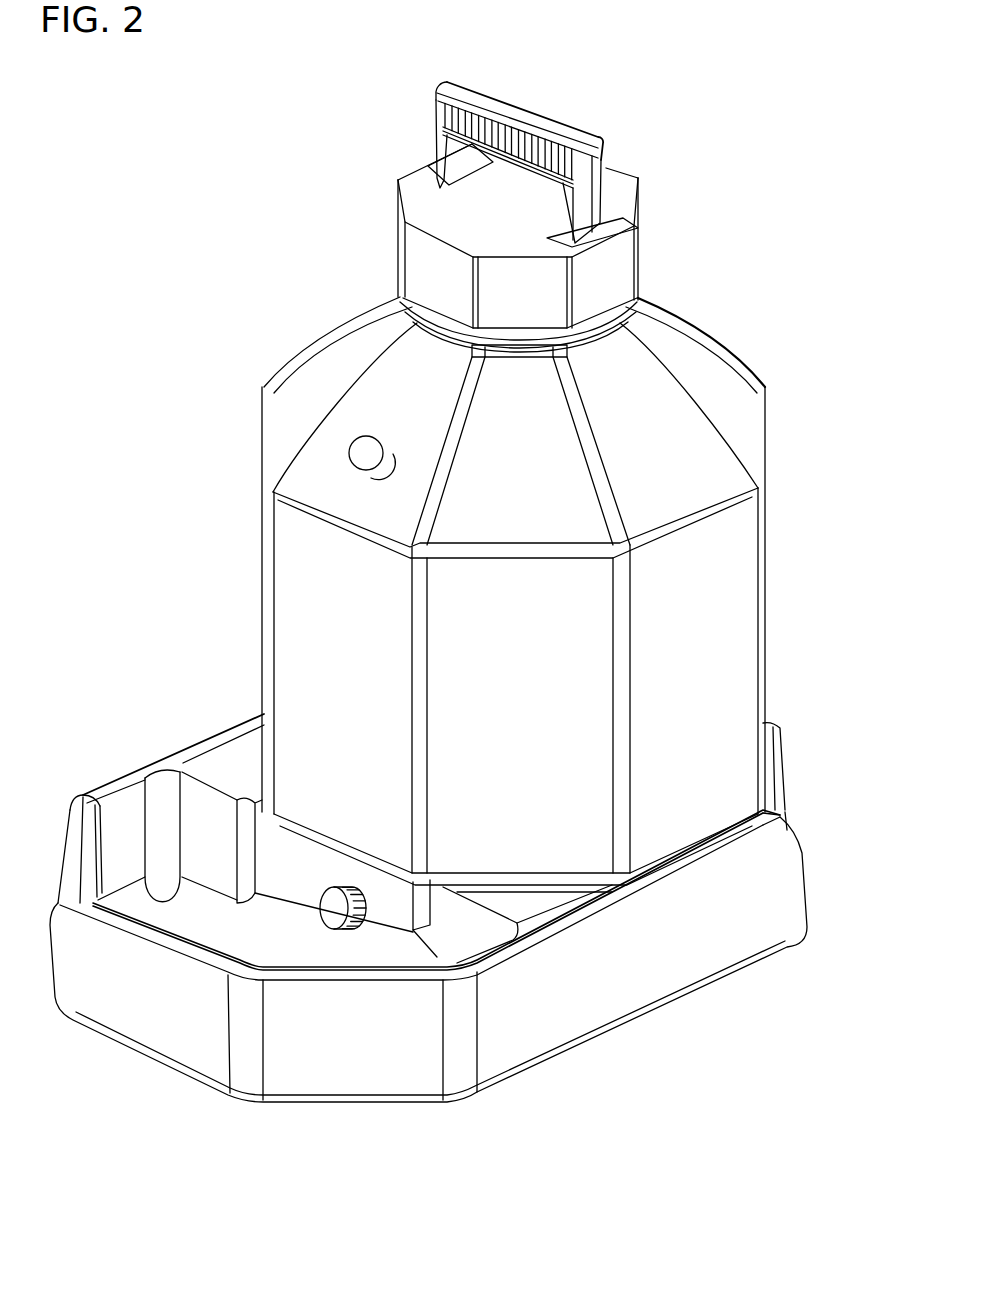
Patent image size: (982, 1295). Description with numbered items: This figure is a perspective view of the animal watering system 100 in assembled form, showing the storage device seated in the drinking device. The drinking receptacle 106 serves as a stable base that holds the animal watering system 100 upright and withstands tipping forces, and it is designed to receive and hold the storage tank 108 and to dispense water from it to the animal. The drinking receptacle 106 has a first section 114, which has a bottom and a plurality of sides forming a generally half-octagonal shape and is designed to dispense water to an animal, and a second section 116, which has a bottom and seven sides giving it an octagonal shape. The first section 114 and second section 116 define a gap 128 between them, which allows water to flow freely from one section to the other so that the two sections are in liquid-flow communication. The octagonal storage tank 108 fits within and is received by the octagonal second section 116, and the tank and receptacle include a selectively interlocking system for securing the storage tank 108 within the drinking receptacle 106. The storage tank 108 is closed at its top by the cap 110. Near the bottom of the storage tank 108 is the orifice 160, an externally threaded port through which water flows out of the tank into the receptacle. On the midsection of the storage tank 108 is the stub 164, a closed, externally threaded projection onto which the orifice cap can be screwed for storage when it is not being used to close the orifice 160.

The animal watering system 100 is at (758, 264).
The drinking receptacle 106 is at (560, 1007).
The storage tank 108 is at (707, 594).
The cap 110 is at (636, 182).
The first section 114 is at (182, 917).
The second section 116 is at (667, 863).
The gap 128 is at (390, 928).
The orifice 160 is at (328, 903).
The stub 164 is at (372, 442).